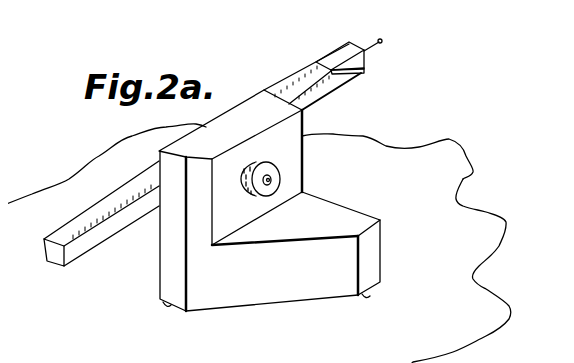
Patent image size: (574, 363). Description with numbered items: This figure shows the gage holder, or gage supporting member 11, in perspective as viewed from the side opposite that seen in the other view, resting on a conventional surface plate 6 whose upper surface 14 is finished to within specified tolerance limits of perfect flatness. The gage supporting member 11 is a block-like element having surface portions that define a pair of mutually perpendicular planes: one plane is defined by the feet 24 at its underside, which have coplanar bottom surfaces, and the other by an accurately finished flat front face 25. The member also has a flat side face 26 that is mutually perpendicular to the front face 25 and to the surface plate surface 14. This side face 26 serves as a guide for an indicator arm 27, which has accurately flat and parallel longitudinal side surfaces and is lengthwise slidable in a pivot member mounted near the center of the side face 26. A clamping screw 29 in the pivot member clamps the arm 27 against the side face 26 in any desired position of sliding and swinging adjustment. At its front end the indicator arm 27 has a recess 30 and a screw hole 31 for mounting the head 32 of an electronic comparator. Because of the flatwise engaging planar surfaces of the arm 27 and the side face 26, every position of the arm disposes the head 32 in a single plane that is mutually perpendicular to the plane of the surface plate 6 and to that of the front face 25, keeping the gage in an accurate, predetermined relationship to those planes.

The surface plate 6 is at (435, 165).
The gage supporting member 11 is at (303, 180).
The upper surface 14 is at (452, 212).
The feet 24 is at (168, 308).
The front face 25 is at (344, 205).
The side face 26 is at (160, 250).
The indicator arm 27 is at (100, 213).
The clamping screw 29 is at (284, 167).
The recess 30 is at (331, 66).
The screw hole 31 is at (363, 71).
The head 32 is at (350, 44).